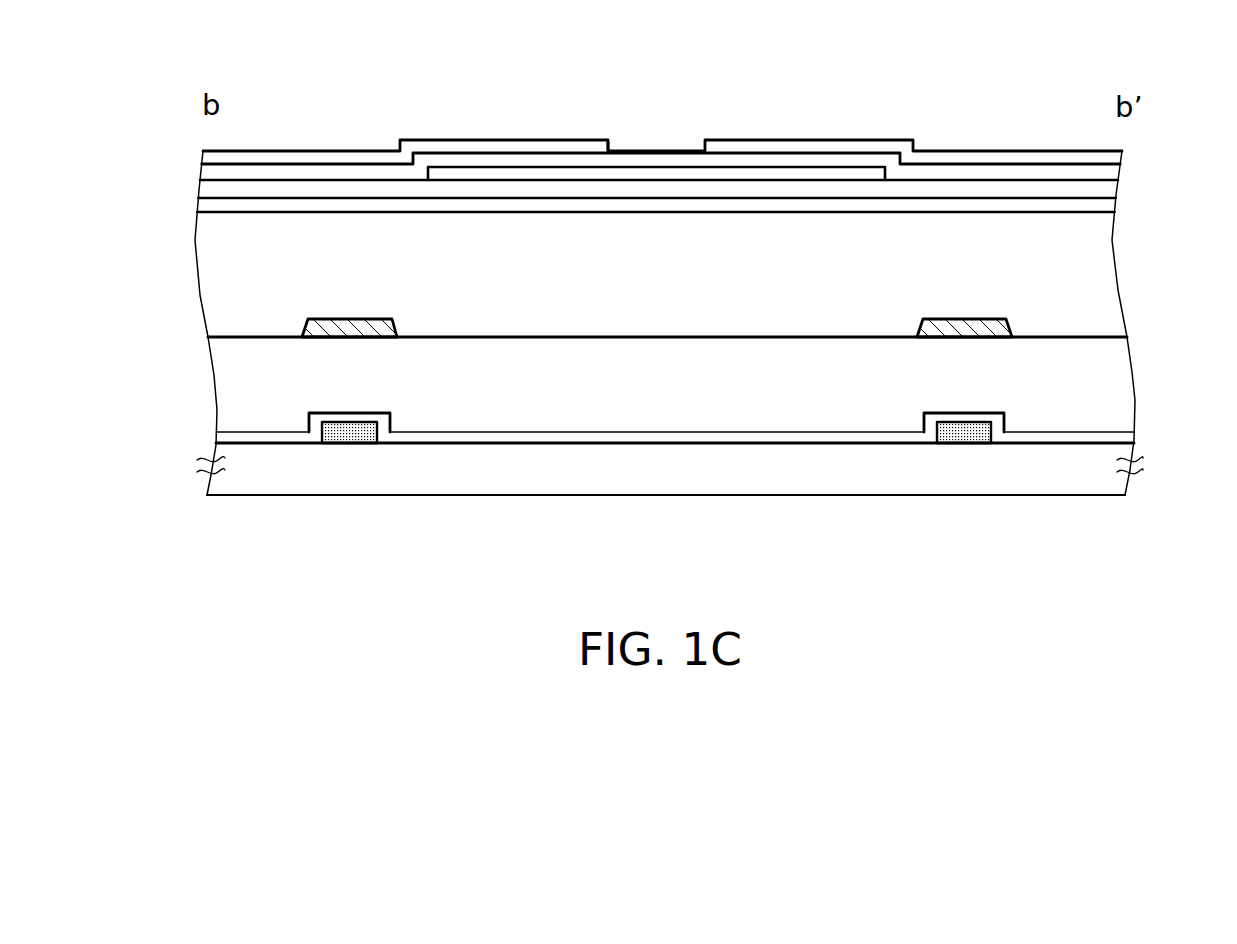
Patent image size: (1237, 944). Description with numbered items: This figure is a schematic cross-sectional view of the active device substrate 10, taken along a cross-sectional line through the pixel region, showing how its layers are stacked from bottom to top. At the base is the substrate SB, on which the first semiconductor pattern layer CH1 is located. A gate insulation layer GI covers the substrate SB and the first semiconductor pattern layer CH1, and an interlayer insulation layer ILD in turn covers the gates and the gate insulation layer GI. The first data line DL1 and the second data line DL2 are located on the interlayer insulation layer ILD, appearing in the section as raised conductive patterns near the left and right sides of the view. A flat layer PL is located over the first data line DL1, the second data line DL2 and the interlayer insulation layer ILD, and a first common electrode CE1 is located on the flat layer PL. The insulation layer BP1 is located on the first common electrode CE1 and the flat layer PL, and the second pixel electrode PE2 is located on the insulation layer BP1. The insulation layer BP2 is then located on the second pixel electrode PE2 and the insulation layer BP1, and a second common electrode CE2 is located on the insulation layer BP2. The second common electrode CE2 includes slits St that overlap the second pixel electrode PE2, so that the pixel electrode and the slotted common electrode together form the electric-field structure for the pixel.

The active device substrate 10 is at (1153, 573).
The second common electrode CE2 is at (212, 157).
The first common electrode CE1 is at (207, 205).
The slit St is at (632, 146).
The second pixel electrode PE2 is at (658, 177).
The insulation layer BP2 is at (1110, 172).
The insulation layer BP1 is at (1107, 188).
The flat layer PL is at (1097, 256).
The interlayer insulation layer ILD is at (1115, 373).
The gate insulation layer GI is at (1117, 436).
The substrate SB is at (1113, 483).
The first data line DL1 is at (348, 328).
The second data line DL2 is at (963, 328).
The first semiconductor pattern layer CH1 is at (958, 438).